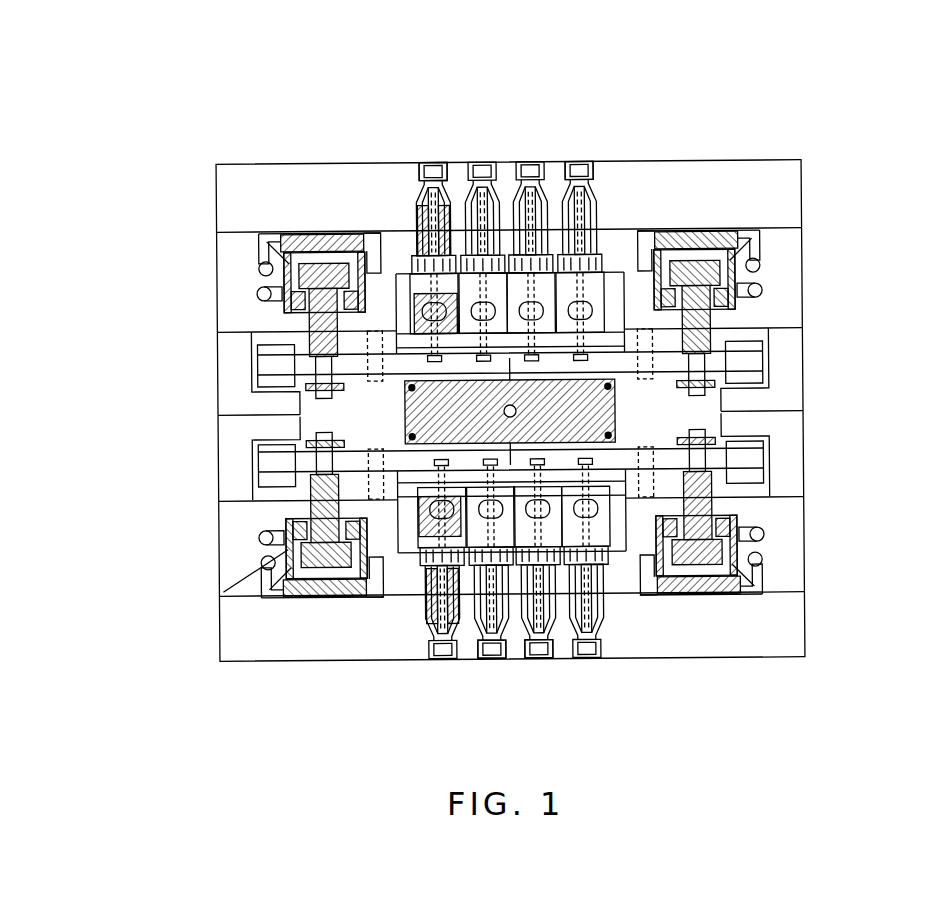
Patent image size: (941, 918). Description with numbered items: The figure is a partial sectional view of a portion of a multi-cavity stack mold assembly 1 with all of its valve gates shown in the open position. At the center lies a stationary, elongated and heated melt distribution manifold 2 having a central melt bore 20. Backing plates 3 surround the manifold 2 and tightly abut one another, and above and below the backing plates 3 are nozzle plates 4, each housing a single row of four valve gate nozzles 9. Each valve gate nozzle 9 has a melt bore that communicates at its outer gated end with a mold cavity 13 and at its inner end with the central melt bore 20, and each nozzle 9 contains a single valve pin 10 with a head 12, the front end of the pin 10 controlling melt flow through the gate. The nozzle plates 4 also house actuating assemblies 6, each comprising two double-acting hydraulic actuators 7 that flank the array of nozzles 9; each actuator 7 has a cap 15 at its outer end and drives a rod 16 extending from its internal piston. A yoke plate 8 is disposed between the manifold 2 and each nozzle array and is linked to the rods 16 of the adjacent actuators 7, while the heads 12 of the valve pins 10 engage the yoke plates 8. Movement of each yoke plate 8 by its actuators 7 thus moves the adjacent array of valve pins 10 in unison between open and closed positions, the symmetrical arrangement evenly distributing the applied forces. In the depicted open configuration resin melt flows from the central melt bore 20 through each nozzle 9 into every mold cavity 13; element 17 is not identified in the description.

The stack mold assembly 1 is at (830, 310).
The melt distribution manifold 2 is at (620, 411).
The backing plates 3 is at (240, 395).
The nozzle plates 4 is at (216, 266).
The actuating assembly 6 is at (770, 367).
The double-acting hydraulic actuator 7 is at (348, 232).
The yoke plate 8 is at (305, 340).
The valve gate nozzle 9 is at (525, 200).
The valve pin 10 is at (460, 660).
The head 12 is at (425, 575).
The mold cavity 13 is at (421, 163).
The cap 15 is at (303, 232).
The rod 16 is at (242, 262).
The pin 17 is at (645, 328).
The central melt bore 20 is at (510, 405).